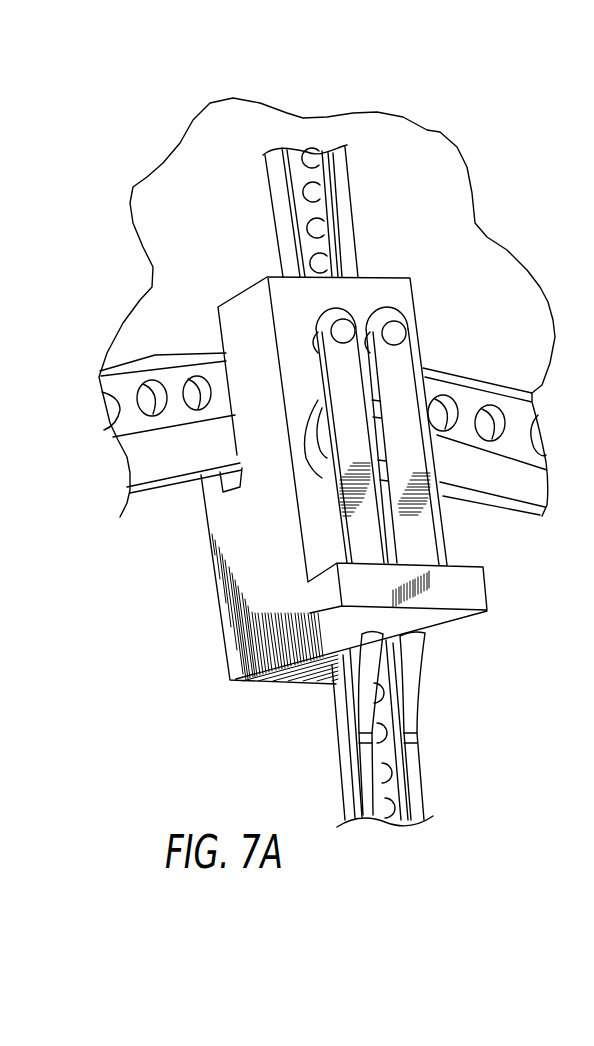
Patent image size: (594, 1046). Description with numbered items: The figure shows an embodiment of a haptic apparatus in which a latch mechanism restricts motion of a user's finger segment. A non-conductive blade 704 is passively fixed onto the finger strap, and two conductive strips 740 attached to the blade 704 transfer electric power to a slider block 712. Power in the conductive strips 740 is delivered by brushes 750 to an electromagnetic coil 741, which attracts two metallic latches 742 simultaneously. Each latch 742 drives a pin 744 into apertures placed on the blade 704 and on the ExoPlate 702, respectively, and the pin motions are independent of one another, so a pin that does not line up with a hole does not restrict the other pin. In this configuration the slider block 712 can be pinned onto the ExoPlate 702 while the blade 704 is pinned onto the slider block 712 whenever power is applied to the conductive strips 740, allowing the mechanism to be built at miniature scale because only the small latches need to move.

The ExoPlate 702 is at (494, 306).
The blade 704 is at (343, 764).
The slider block 712 is at (248, 565).
The conductive strips 740 is at (411, 773).
The electromagnetic coil 741 is at (300, 420).
The metallic latches 742 is at (420, 538).
The pin 744 is at (335, 329).
The brushes 750 is at (407, 694).